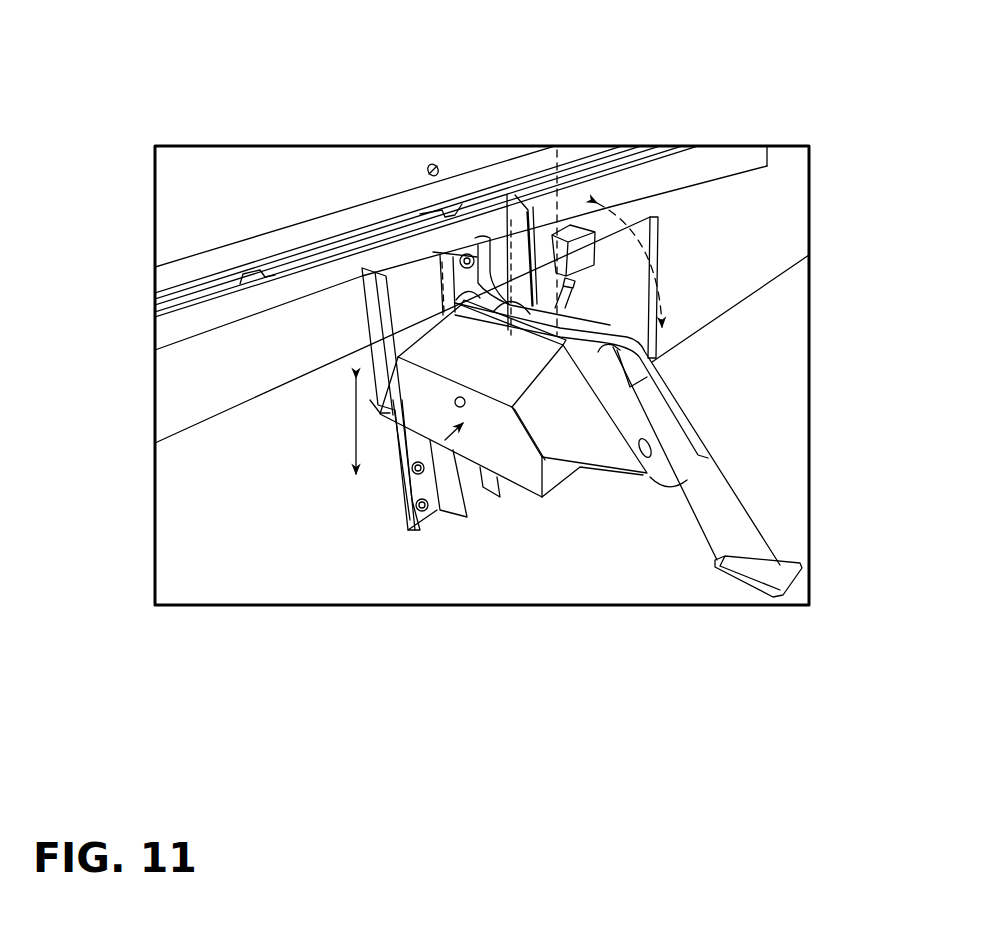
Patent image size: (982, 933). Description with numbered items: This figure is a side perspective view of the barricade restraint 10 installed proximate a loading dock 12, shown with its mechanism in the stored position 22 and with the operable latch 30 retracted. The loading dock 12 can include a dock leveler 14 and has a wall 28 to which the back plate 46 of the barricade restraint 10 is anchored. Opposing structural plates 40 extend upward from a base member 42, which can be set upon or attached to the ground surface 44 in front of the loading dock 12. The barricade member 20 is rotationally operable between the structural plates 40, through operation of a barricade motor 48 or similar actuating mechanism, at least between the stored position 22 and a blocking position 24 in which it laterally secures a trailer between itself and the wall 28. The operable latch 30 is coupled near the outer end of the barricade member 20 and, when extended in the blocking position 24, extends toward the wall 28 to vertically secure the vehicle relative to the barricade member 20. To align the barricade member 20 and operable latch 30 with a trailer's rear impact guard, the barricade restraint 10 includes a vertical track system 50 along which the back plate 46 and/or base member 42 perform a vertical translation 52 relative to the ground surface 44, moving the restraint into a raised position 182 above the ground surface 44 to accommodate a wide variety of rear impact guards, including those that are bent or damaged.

The barricade restraint 10 is at (677, 272).
The loading dock 12 is at (533, 117).
The dock leveler 14 is at (203, 186).
The barricade member 20 is at (637, 387).
The stored position 22 is at (700, 332).
The blocking position 24 is at (572, 182).
The wall 28 is at (207, 377).
The operable latch 30 is at (523, 158).
The structural plates 40 is at (623, 402).
The base member 42 is at (538, 500).
The ground surface 44 is at (777, 497).
The back plate 46 is at (424, 350).
The barricade motor 48 is at (402, 523).
The vertical track system 50 is at (440, 282).
The vertical translation 52 is at (358, 428).
The raised position 182 is at (410, 528).